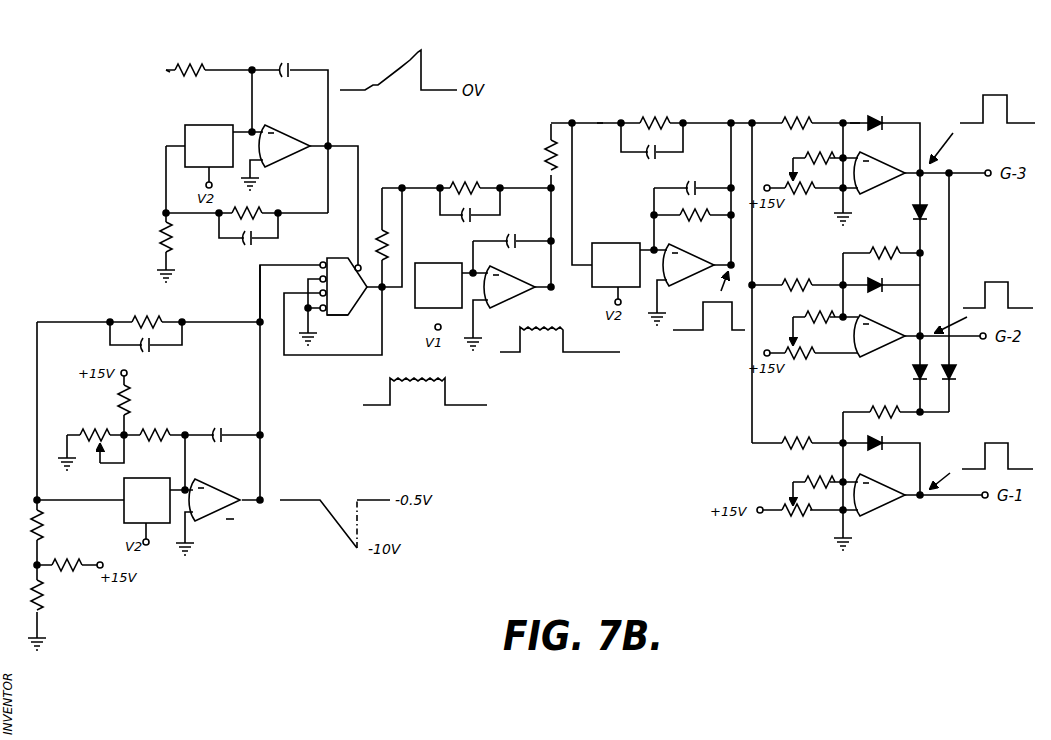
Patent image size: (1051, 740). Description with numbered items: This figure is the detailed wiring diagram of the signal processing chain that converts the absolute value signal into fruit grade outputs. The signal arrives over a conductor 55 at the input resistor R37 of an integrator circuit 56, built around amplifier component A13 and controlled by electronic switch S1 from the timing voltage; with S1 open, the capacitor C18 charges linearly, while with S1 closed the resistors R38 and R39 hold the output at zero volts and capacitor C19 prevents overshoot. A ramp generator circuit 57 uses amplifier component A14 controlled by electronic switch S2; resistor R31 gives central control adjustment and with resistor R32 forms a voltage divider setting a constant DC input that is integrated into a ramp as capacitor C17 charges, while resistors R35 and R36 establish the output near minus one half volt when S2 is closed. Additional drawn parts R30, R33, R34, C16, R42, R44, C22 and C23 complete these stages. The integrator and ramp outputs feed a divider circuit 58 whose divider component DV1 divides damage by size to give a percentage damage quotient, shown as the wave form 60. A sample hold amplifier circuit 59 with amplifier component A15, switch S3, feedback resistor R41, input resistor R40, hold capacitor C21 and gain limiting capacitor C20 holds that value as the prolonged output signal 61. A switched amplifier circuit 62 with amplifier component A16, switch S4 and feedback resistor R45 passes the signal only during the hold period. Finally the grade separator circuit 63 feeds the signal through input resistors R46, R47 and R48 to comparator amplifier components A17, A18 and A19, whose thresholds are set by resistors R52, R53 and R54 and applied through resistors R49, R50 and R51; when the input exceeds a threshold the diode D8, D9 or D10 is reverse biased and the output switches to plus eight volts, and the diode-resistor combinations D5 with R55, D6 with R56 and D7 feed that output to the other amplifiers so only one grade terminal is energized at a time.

The resistor R30 is at (147, 313).
The resistor R31 is at (95, 424).
The resistor R32 is at (141, 399).
The resistor R33 is at (155, 424).
The resistor R34 is at (21, 525).
The resistor R35 is at (53, 595).
The resistor R36 is at (66, 555).
The input resistor R37 is at (190, 78).
The resistor R38 is at (145, 237).
The resistor R39 is at (247, 205).
The resistor R40 is at (384, 248).
The resistor R41 is at (460, 179).
The resistor R42 is at (533, 155).
The resistor R44 is at (650, 113).
The resistor R45 is at (689, 224).
The input resistor R46 is at (797, 113).
The input resistor R47 is at (794, 274).
The input resistor R48 is at (796, 433).
The resistor R49 is at (817, 148).
The resistor R50 is at (816, 307).
The resistor R51 is at (816, 473).
The resistor R52 is at (808, 196).
The resistor R53 is at (806, 361).
The resistor R54 is at (797, 519).
The resistor R55 is at (881, 244).
The resistor R56 is at (881, 402).
The capacitor C16 is at (155, 353).
The capacitor C17 is at (219, 425).
The capacitor C18 is at (284, 78).
The capacitor C19 is at (246, 246).
The capacitor C20 is at (464, 223).
The capacitor C21 is at (514, 250).
The capacitor C22 is at (641, 160).
The capacitor C23 is at (687, 177).
The electronic switch S1 is at (209, 146).
The electronic switch S2 is at (147, 500).
The electronic switch S3 is at (438, 285).
The electronic switch S4 is at (616, 265).
The amplifier component A13 is at (284, 146).
The amplifier component A14 is at (214, 500).
The amplifier component A15 is at (509, 287).
The amplifier component A16 is at (688, 265).
The amplifier component A17 is at (879, 173).
The amplifier component A18 is at (879, 336).
The amplifier component A19 is at (879, 495).
The diode D5 is at (902, 212).
The diode D6 is at (903, 372).
The diode D7 is at (962, 372).
The diode D8 is at (889, 112).
The diode D9 is at (878, 294).
The diode D10 is at (882, 452).
The divider component DV1 is at (347, 286).
The conductor 55 is at (174, 67).
The integrator circuit 56 is at (266, 66).
The ramp generator circuit 57 is at (232, 524).
The divider circuit 58 is at (345, 327).
The sample hold amplifier circuit 59 is at (487, 181).
The wave form 60 is at (388, 299).
The prolonged output signal 61 is at (550, 298).
The switched amplifier circuit 62 is at (599, 121).
The grade separator circuit 63 is at (861, 114).